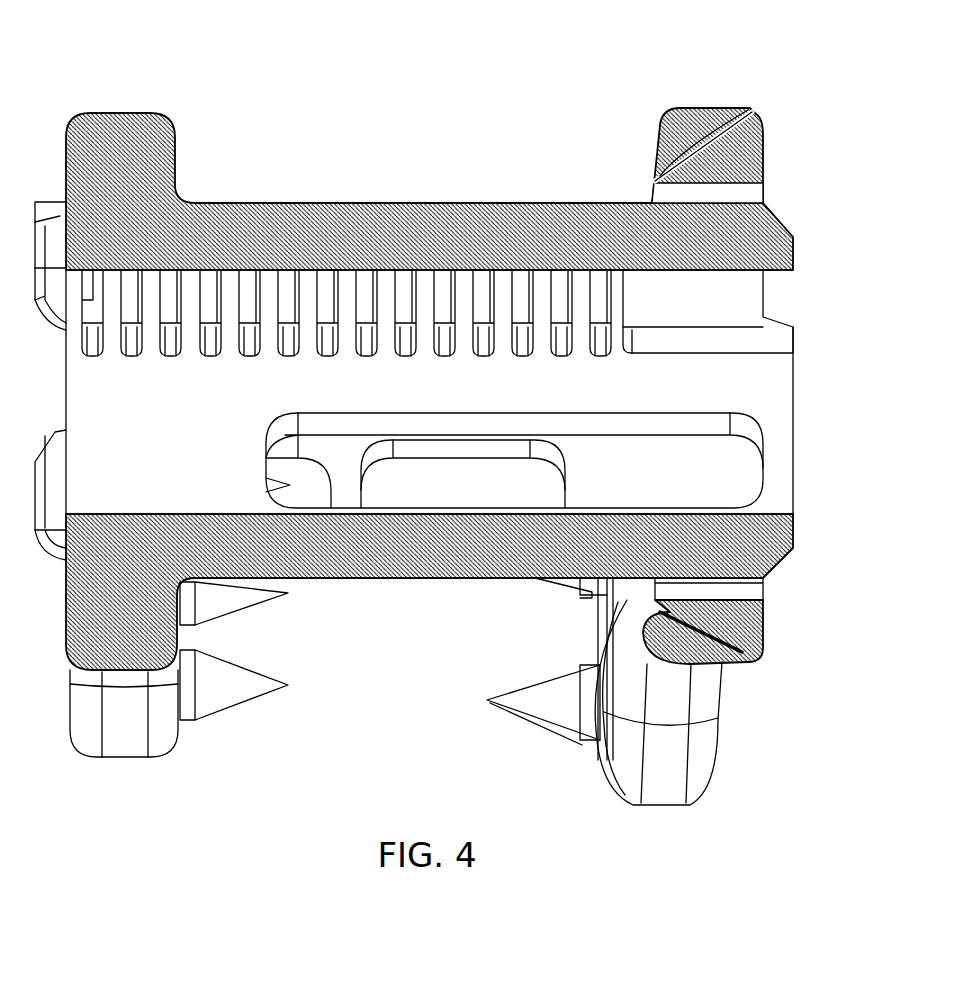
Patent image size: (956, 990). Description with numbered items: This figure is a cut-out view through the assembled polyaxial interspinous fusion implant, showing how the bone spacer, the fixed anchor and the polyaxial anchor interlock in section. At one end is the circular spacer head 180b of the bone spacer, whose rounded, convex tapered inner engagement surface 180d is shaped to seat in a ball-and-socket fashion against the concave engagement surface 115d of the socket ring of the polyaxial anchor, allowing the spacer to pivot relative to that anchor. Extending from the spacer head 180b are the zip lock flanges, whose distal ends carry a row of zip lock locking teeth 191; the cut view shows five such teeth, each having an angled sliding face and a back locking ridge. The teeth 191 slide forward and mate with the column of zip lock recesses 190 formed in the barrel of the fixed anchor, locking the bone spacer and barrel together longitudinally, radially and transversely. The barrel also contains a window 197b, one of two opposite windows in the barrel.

The zip lock recess 190 is at (346, 257).
The zip lock locking tooth 191 is at (252, 282).
The spacer head 180b is at (692, 137).
The convex engagement surface 180d is at (660, 162).
The window 197b is at (741, 471).
The concave engagement surface 115d is at (655, 606).